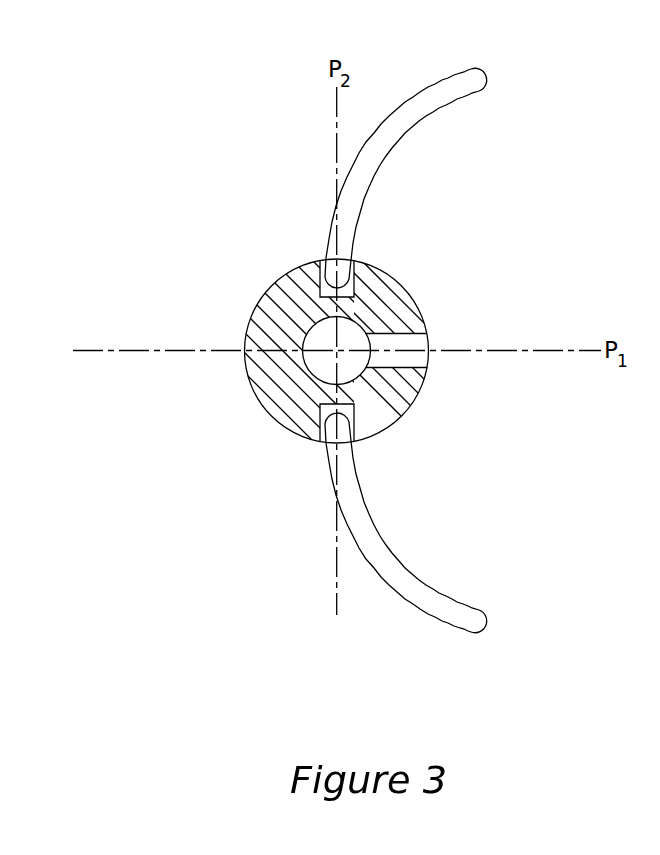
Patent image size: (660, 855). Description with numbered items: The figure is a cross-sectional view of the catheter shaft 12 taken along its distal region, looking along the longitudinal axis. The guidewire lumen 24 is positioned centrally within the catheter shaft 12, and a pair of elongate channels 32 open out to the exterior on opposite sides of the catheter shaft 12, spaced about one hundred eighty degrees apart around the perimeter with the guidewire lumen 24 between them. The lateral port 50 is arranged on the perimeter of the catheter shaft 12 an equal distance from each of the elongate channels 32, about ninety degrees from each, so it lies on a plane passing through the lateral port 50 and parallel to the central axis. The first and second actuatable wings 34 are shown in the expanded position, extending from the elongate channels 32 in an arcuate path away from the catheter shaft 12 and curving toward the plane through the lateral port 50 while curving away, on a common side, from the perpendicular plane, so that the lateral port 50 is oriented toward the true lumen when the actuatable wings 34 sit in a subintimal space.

The catheter shaft 12 is at (274, 282).
The guidewire lumen 24 is at (318, 365).
The elongate channel 32 is at (360, 254).
The actuatable wing 34 is at (469, 83).
The lateral port 50 is at (418, 340).